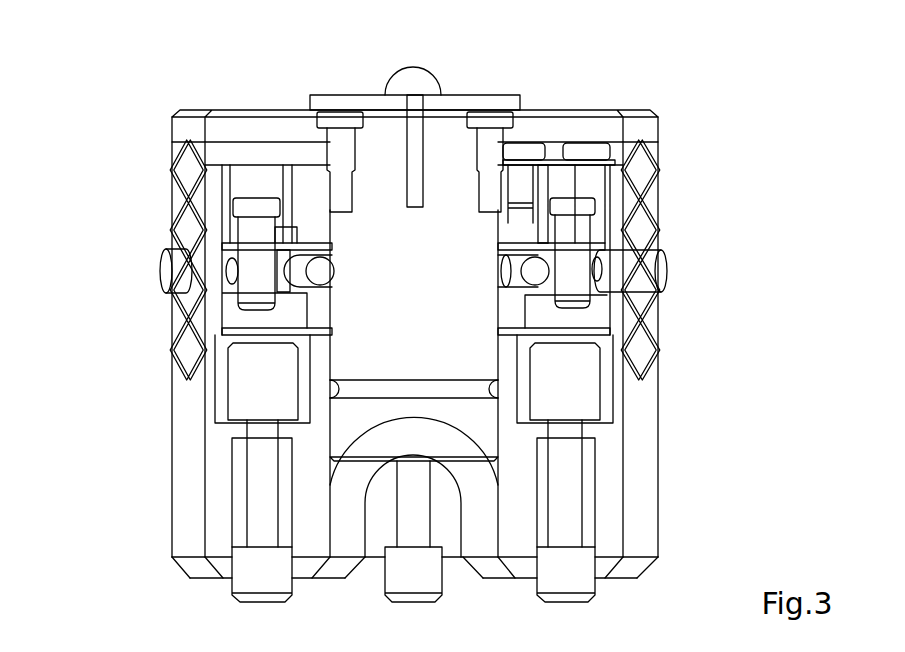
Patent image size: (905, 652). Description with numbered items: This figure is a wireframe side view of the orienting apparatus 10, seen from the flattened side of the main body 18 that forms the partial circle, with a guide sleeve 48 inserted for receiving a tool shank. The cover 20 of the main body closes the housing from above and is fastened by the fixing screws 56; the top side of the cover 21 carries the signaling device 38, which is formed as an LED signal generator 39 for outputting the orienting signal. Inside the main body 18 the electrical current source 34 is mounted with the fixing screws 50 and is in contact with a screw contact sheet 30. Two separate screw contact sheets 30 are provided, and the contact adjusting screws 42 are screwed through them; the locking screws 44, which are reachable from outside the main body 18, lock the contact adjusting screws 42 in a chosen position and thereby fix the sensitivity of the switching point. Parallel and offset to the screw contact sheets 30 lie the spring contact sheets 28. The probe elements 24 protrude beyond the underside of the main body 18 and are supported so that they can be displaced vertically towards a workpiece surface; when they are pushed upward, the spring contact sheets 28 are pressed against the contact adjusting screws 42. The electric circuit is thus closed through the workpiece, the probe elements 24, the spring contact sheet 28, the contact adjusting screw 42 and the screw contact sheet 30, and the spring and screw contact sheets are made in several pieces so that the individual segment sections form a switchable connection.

The orienting apparatus 10 is at (747, 150).
The main body 18 is at (180, 419).
The cover of the main body 20 is at (180, 131).
The top side of the cover 21 is at (246, 107).
The probe elements 24 is at (262, 475).
The spring contact sheet 28 is at (235, 330).
The screw contact sheet 30 is at (225, 247).
The electrical current source 34 is at (556, 182).
The signaling device 38 is at (426, 47).
The LED signal generator 39 is at (414, 78).
The contact adjusting screw 42 is at (240, 205).
The locking screw 44 is at (160, 280).
The guide sleeve 48 is at (371, 100).
The fixing screw for battery 50 is at (527, 150).
The fixing screw for cover of the main body 56 is at (340, 118).